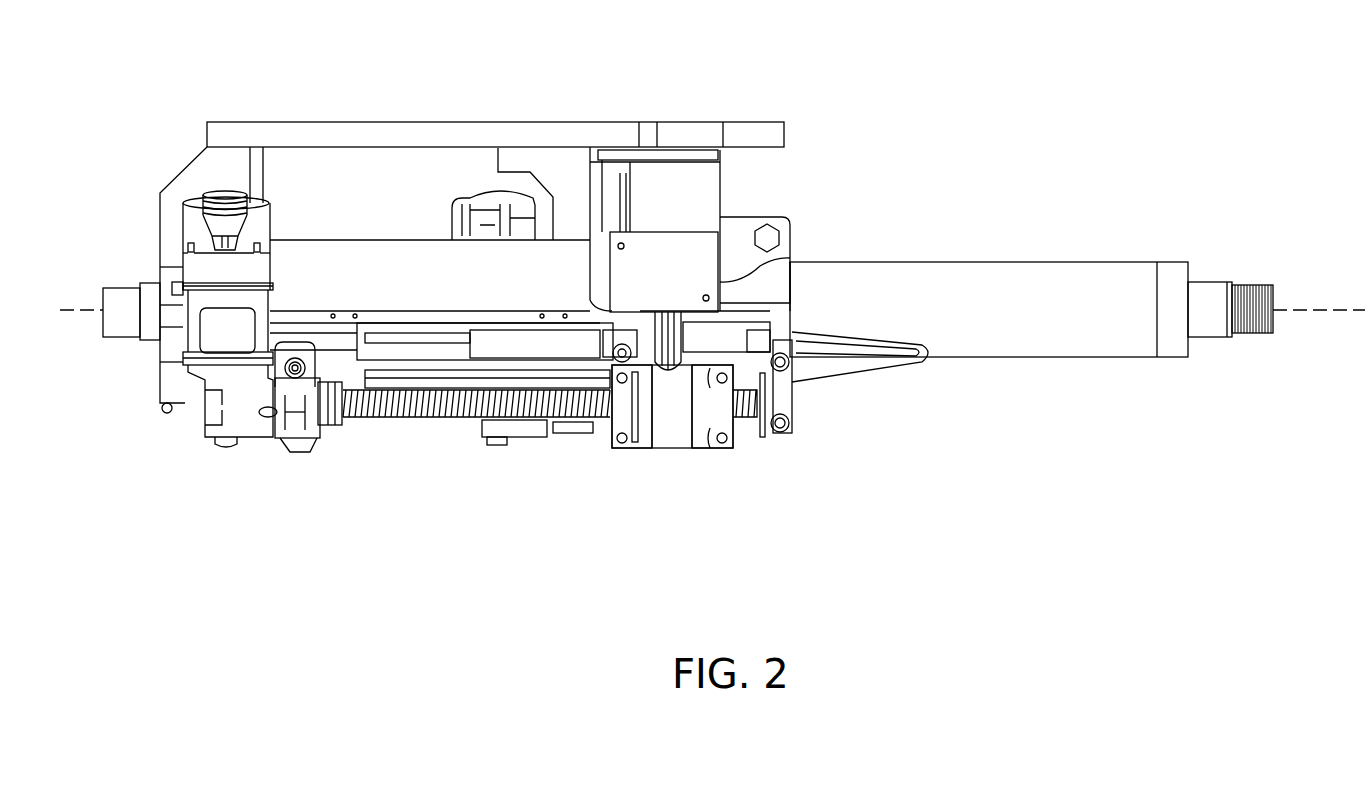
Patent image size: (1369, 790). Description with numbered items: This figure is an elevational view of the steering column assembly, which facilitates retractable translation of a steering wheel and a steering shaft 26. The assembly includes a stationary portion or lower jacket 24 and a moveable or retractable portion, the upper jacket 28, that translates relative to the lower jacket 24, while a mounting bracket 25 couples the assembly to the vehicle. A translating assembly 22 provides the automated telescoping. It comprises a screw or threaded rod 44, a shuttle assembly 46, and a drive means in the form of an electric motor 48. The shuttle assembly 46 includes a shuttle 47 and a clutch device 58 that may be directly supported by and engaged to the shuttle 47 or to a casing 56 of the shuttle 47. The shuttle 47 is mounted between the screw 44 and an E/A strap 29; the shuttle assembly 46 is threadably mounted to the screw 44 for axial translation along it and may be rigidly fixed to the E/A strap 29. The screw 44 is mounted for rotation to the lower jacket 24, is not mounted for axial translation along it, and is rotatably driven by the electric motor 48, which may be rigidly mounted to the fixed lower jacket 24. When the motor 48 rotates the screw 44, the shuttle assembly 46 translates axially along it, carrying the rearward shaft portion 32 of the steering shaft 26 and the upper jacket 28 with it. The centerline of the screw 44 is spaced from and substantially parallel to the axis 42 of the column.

The drive assembly 22 is at (592, 465).
The stationary portion 24 is at (388, 238).
The mounting bracket 25 is at (523, 122).
The steering shaft 26 is at (1221, 350).
The upper jacket 28 is at (928, 262).
The E/A strap 29 is at (857, 378).
The rearward shaft portion 32 is at (1207, 282).
The axis 42 is at (1292, 313).
The screw 44 is at (378, 422).
The shuttle assembly 46 is at (664, 468).
The shuttle 47 is at (700, 438).
The electric actuator mechanism 48 is at (273, 227).
The casing 56 is at (643, 438).
The clutch device 58 is at (663, 232).